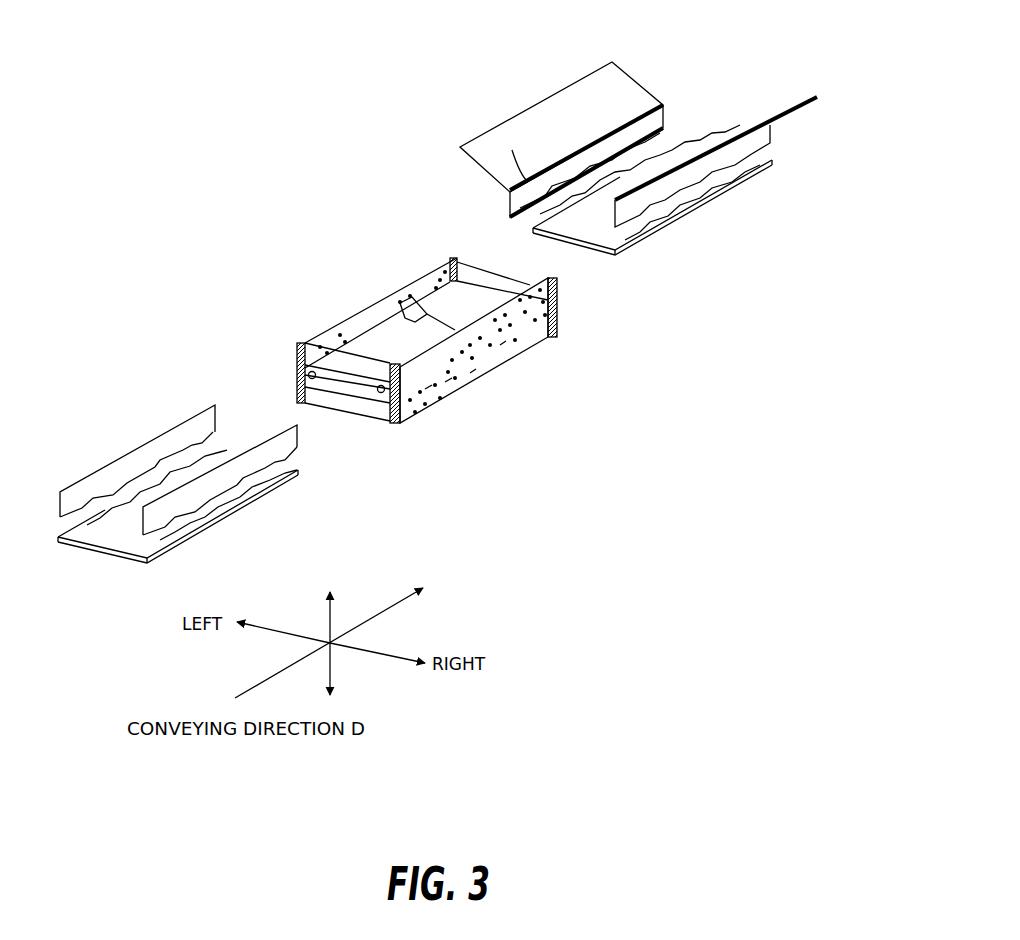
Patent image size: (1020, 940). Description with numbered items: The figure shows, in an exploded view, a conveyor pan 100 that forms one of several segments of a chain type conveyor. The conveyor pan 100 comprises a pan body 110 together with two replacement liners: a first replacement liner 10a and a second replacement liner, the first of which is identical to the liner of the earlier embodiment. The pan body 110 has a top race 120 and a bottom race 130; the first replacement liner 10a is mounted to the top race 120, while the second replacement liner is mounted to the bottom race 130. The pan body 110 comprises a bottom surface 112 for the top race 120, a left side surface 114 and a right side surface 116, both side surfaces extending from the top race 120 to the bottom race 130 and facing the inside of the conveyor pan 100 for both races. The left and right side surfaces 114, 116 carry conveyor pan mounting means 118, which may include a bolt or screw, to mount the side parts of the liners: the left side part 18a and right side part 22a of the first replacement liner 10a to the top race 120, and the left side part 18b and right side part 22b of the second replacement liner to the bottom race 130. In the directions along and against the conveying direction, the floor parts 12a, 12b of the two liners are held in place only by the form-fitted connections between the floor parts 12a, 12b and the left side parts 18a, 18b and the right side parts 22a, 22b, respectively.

The first replacement liner 10a is at (703, 92).
The left side part 18a is at (524, 183).
The right side part 22a is at (770, 140).
The floor part 12a is at (670, 228).
The left side part 18b is at (168, 454).
The right side part 22b is at (285, 452).
The floor part 12b is at (230, 497).
The conveyor pan 100 is at (565, 368).
The pan body 110 is at (463, 385).
The bottom surface 112 is at (318, 342).
The left side surface 114 is at (413, 280).
The right side surface 116 is at (403, 357).
The conveyor pan mounting means 118 is at (480, 322).
The top race 120 is at (510, 280).
The bottom race 130 is at (407, 428).